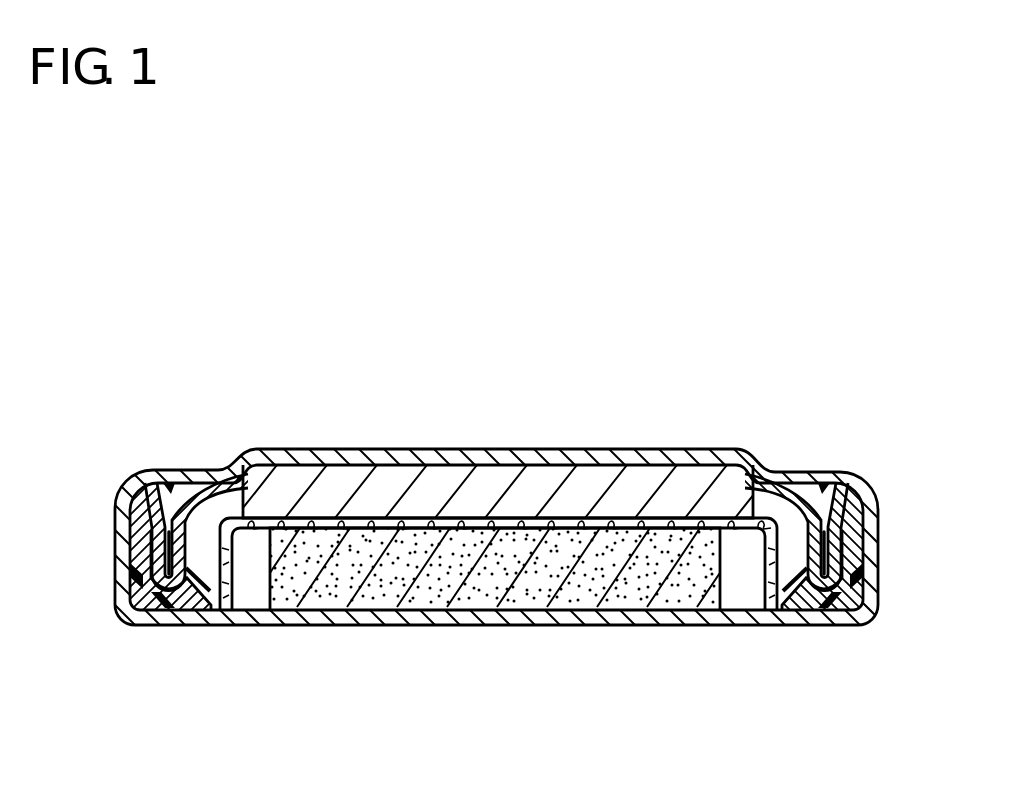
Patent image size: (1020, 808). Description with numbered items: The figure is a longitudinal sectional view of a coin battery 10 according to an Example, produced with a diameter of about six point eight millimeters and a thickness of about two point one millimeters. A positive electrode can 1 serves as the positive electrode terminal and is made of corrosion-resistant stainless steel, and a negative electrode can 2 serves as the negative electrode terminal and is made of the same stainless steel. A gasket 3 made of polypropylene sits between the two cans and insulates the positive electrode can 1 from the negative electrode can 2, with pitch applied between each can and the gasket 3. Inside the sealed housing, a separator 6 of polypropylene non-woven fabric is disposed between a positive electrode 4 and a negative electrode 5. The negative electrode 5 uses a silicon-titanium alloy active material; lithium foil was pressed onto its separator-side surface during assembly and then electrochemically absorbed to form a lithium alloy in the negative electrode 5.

The coin-type battery 10 is at (594, 318).
The positive electrode can 1 is at (768, 618).
The negative electrode can 2 is at (607, 452).
The gasket 3 is at (852, 480).
The positive electrode 4 is at (403, 588).
The negative electrode 5 is at (453, 483).
The separator 6 is at (310, 520).